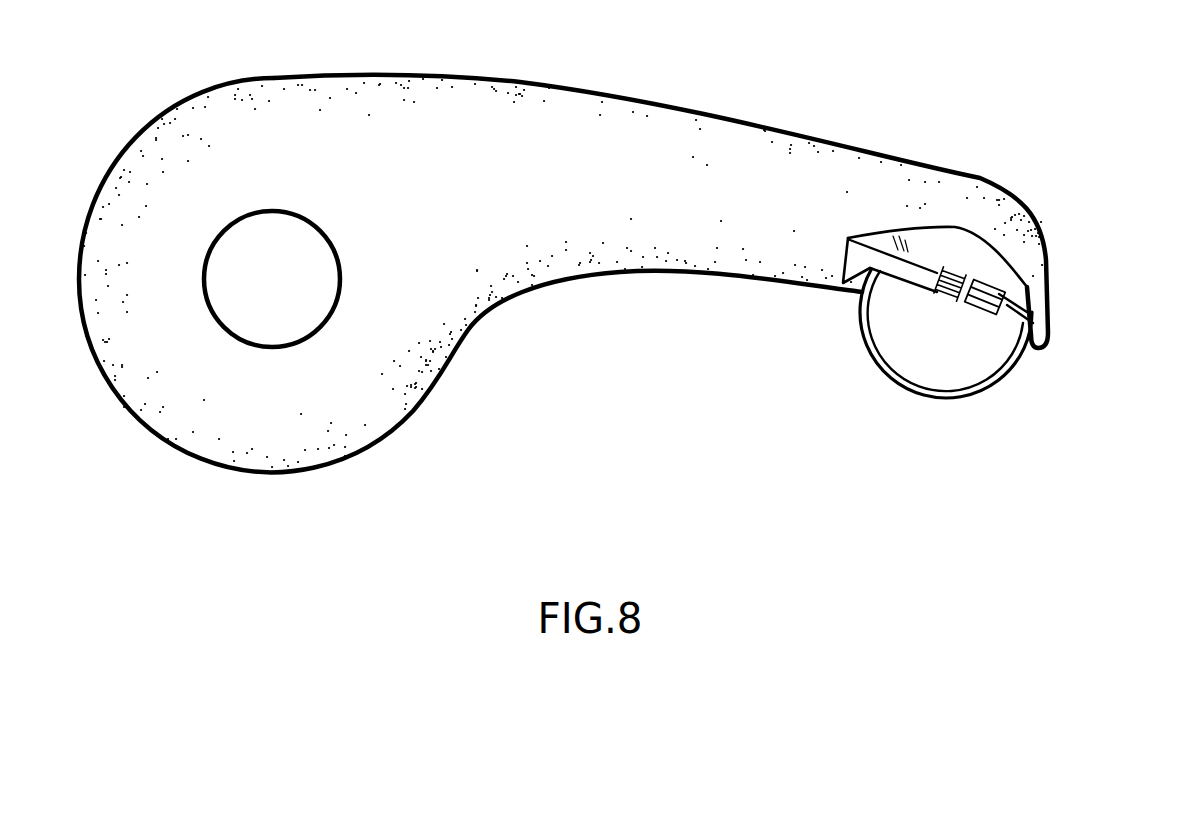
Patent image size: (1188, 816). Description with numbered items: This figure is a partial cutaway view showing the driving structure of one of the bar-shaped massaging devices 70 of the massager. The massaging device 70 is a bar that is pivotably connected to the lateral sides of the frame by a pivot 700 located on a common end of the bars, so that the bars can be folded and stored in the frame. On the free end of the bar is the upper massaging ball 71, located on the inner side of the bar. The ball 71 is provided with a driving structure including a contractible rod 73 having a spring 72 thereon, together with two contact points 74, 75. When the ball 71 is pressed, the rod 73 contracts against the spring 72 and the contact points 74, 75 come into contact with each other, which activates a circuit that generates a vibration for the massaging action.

The massaging device 70 is at (535, 122).
The pivot 700 is at (254, 260).
The massaging ball 71 is at (938, 373).
The spring 72 is at (940, 257).
The contractible rod 73 is at (937, 295).
The contact point 74 is at (993, 283).
The contact point 75 is at (1053, 320).